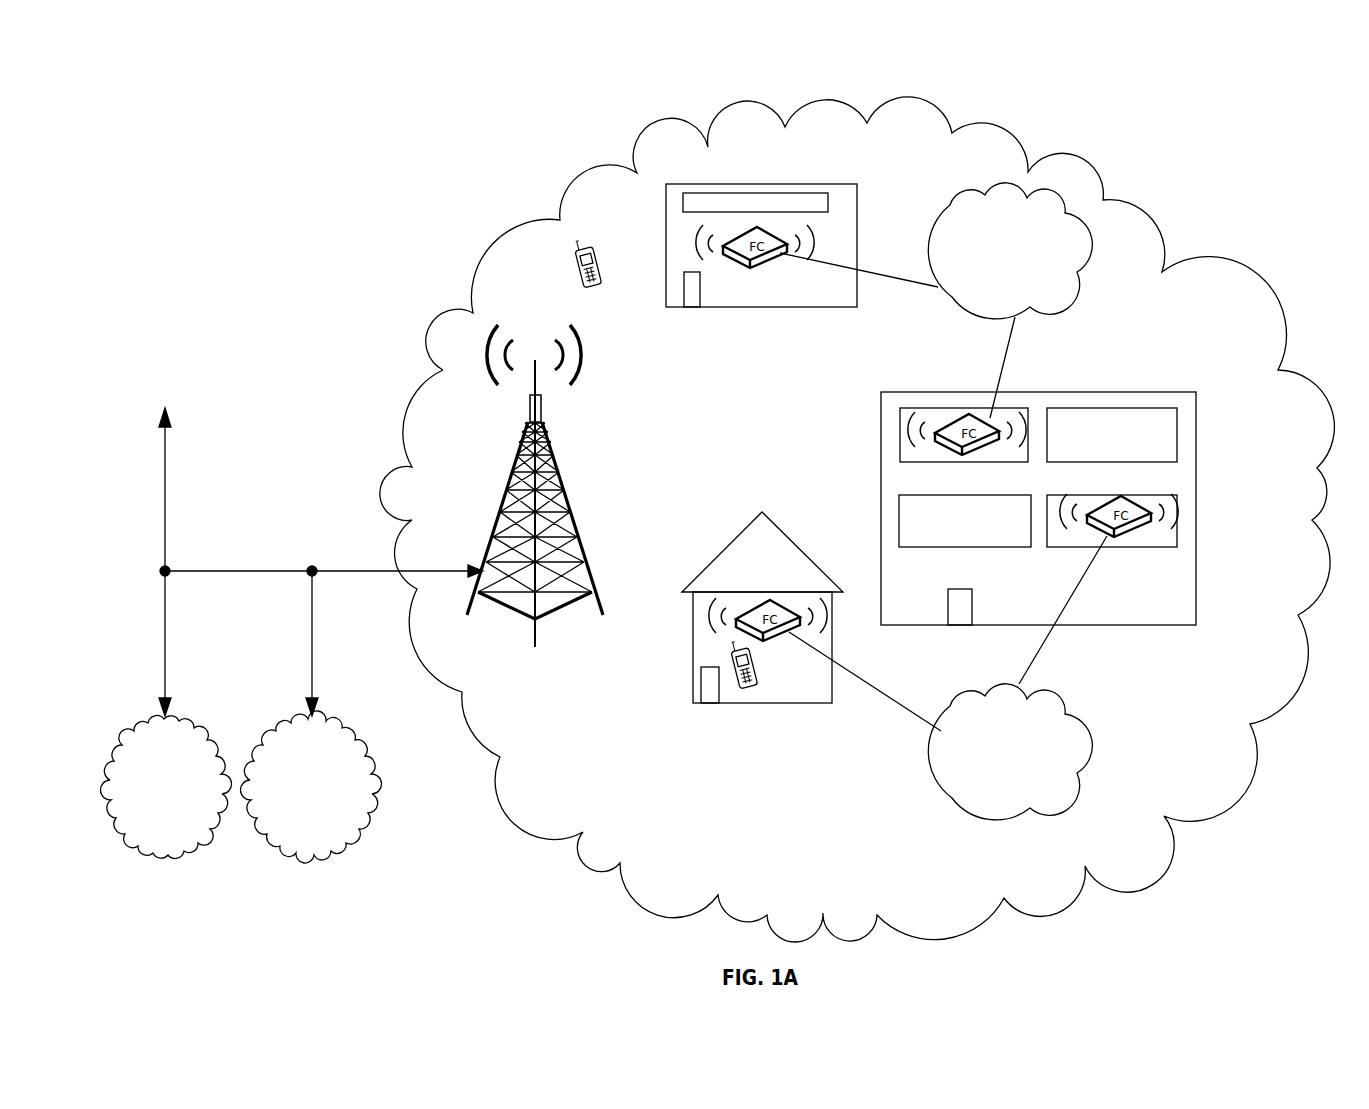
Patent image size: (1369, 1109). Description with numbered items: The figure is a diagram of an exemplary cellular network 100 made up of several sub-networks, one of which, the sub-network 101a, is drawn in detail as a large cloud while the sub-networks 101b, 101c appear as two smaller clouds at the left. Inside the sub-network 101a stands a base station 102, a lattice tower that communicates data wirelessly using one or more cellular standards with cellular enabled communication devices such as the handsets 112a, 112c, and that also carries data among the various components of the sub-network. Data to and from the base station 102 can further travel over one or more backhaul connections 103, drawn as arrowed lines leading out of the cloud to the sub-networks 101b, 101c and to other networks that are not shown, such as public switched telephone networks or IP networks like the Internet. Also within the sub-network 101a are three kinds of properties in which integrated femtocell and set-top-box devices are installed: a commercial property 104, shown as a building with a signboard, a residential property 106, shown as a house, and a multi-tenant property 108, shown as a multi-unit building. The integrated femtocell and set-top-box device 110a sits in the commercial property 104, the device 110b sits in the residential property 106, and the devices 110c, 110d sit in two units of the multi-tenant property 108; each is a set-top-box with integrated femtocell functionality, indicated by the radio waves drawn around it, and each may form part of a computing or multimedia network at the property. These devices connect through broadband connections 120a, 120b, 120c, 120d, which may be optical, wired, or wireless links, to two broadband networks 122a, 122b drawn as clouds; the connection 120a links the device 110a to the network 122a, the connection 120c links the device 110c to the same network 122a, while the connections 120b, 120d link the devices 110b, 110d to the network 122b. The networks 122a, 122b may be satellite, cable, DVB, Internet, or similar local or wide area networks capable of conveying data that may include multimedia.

The cellular network 100 is at (140, 137).
The sub-network 101a is at (592, 157).
The sub-network 101b is at (167, 855).
The sub-network 101c is at (311, 855).
The base station 102 is at (555, 452).
The backhaul connections 103 is at (250, 571).
The commercial properties 104 is at (700, 182).
The residential properties 106 is at (730, 542).
The multi-tenant properties 108 is at (1196, 424).
The integrated femtocell and set-top-box (IFSTB) device 110a is at (760, 265).
The integrated femtocell and set-top-box (IFSTB) device 110b is at (772, 640).
The integrated femtocell and set-top-box (IFSTB) device 110c is at (972, 452).
The integrated femtocell and set-top-box (IFSTB) device 110d is at (1124, 534).
The cellular enabled communication device 112a is at (590, 252).
The cellular enabled communication device 112c is at (742, 692).
The broadband connection 120a is at (900, 273).
The broadband connection 120b is at (870, 690).
The broadband connection 120c is at (1005, 360).
The broadband connection 120d is at (1046, 645).
The network 122a is at (1075, 293).
The network 122b is at (1077, 784).